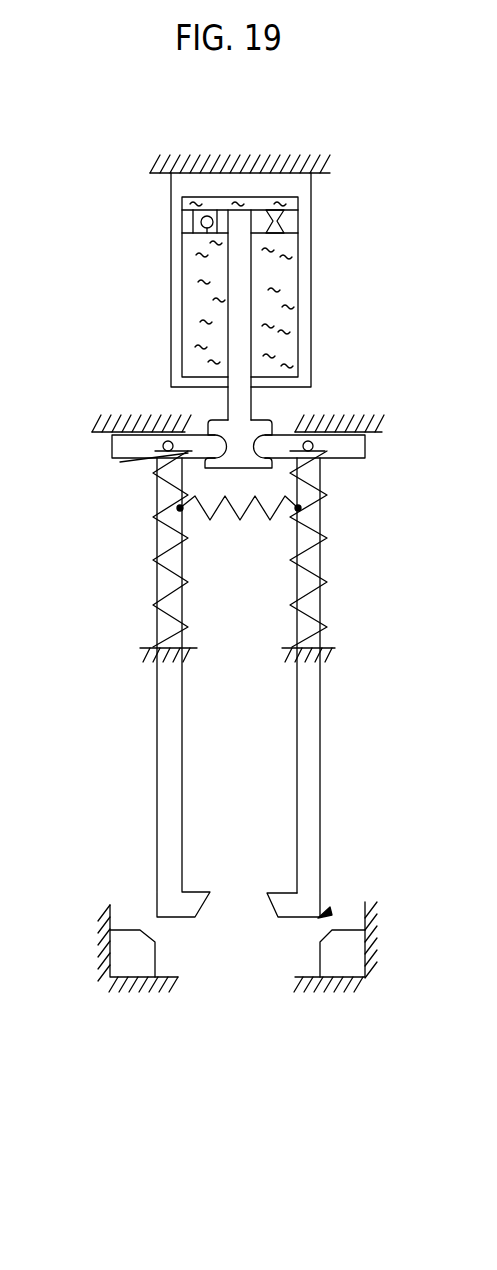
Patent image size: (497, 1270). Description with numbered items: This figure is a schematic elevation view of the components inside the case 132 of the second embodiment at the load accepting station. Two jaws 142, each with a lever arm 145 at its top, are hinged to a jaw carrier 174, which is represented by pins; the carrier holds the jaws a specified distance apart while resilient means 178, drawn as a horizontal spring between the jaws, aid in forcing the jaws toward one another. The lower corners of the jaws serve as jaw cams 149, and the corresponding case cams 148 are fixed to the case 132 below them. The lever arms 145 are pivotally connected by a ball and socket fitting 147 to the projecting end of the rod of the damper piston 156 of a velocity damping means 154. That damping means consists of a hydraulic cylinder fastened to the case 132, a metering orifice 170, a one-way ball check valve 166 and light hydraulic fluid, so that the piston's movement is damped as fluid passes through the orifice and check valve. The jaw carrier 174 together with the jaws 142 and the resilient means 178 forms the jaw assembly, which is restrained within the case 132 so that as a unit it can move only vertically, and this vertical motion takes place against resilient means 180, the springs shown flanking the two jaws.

The case 132 is at (310, 163).
The jaw 142 is at (281, 688).
The lever arm 145 is at (188, 445).
The ball and socket fitting 147 is at (237, 442).
The case cam 148 is at (348, 945).
The jaw cam 149 is at (322, 916).
The velocity damping means 154 is at (305, 305).
The damper piston 156 is at (250, 215).
The one-way ball check valve 166 is at (201, 222).
The metering orifice 170 is at (279, 222).
The jaw carrier 174 is at (310, 435).
The resilient means 178 is at (240, 500).
The resilient means 180 is at (322, 537).